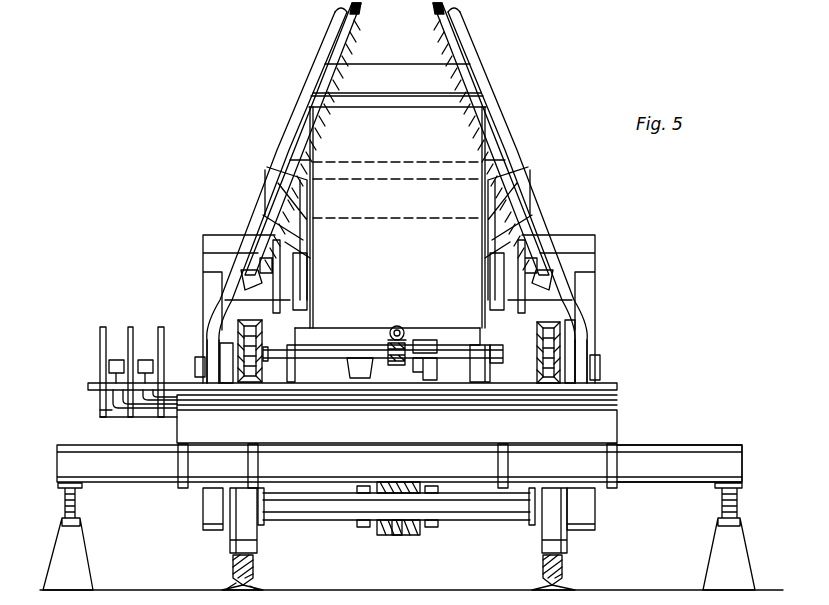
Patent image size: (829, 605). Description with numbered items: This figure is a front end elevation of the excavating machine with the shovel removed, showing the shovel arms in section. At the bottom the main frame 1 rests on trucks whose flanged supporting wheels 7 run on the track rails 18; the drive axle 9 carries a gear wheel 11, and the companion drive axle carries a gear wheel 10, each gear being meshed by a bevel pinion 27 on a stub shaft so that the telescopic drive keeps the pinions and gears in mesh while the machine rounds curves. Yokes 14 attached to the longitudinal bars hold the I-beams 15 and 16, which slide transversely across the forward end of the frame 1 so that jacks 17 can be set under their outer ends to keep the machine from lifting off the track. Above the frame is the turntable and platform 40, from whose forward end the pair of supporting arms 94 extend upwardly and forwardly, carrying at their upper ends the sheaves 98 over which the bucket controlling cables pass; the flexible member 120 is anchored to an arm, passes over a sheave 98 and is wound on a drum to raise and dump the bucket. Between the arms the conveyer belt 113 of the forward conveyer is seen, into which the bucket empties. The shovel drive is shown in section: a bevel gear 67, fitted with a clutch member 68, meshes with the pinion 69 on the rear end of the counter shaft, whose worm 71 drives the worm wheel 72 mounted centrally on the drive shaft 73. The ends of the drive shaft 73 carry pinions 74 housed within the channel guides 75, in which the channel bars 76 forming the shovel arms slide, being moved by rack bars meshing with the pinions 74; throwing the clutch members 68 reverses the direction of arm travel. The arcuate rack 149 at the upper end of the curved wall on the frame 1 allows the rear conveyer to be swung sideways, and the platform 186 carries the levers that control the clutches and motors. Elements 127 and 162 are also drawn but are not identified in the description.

The main frame 1 is at (614, 428).
The supporting wheels 7 is at (228, 544).
The drive axle 9 is at (510, 520).
The gear wheel 10 is at (420, 532).
The gear wheel 11 is at (377, 527).
The yokes 14 is at (252, 467).
The I-beam 15 is at (720, 458).
The I-beam 16 is at (57, 462).
The jacks 17 is at (77, 542).
The track rails 18 is at (257, 570).
The bevel pinions 27 is at (397, 530).
The turntable and platform 40 is at (622, 389).
The bevel gear 67 is at (390, 362).
The clutch member 68 is at (440, 338).
The pinion 69 is at (393, 328).
The worm 71 is at (425, 338).
The worm wheel 72 is at (420, 367).
The drive shaft 73 is at (485, 385).
The pinions 74 is at (222, 337).
The channel guides 75 is at (240, 320).
The channel bars 76 is at (560, 358).
The supporting arms 94 is at (285, 132).
The sheaves 98 is at (438, 26).
The conveyer belt 113 is at (390, 217).
The flexible member 120 is at (480, 122).
The truss 127 is at (273, 203).
The arcuate rack 149 is at (590, 262).
The guide line 162 is at (495, 170).
The platform 186 is at (93, 383).